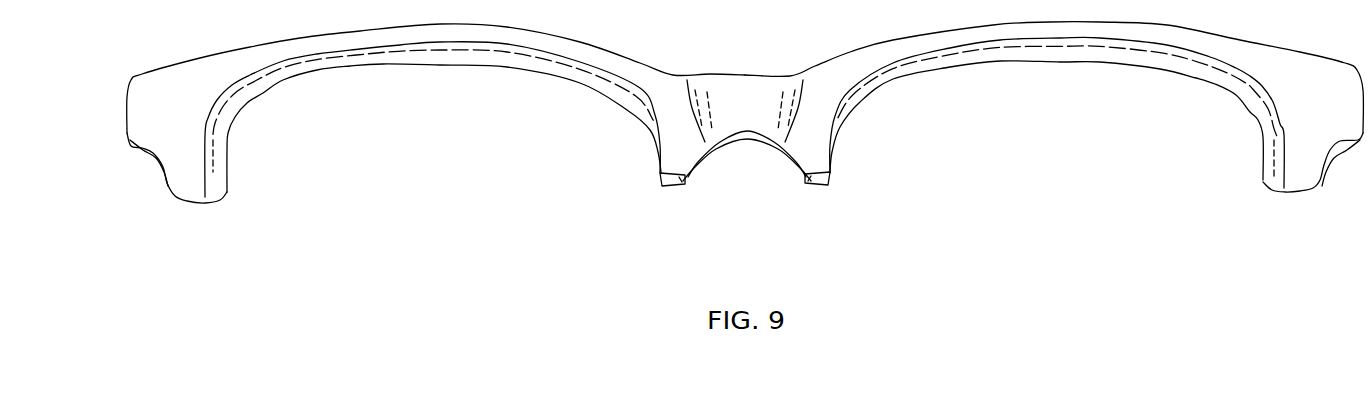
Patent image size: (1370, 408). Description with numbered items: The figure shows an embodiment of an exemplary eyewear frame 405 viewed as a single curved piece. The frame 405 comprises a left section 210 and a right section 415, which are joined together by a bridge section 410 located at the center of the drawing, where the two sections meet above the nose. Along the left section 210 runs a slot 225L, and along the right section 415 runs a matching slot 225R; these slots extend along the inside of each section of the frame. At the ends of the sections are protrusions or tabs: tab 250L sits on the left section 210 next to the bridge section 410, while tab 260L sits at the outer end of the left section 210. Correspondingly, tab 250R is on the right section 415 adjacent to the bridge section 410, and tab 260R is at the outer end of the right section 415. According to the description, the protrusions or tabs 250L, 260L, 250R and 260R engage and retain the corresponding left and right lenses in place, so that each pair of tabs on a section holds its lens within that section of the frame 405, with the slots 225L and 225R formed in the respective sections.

The left section 210 is at (353, 63).
The slot 225L is at (477, 62).
The slot 225R is at (875, 87).
The protrusion or tab 250L is at (660, 183).
The protrusion or tab 250R is at (830, 183).
The protrusion or tab 260L is at (207, 205).
The protrusion or tab 260R is at (1283, 193).
The eyewear frame 405 is at (735, 72).
The bridge section 410 is at (730, 127).
The right section 415 is at (1032, 60).